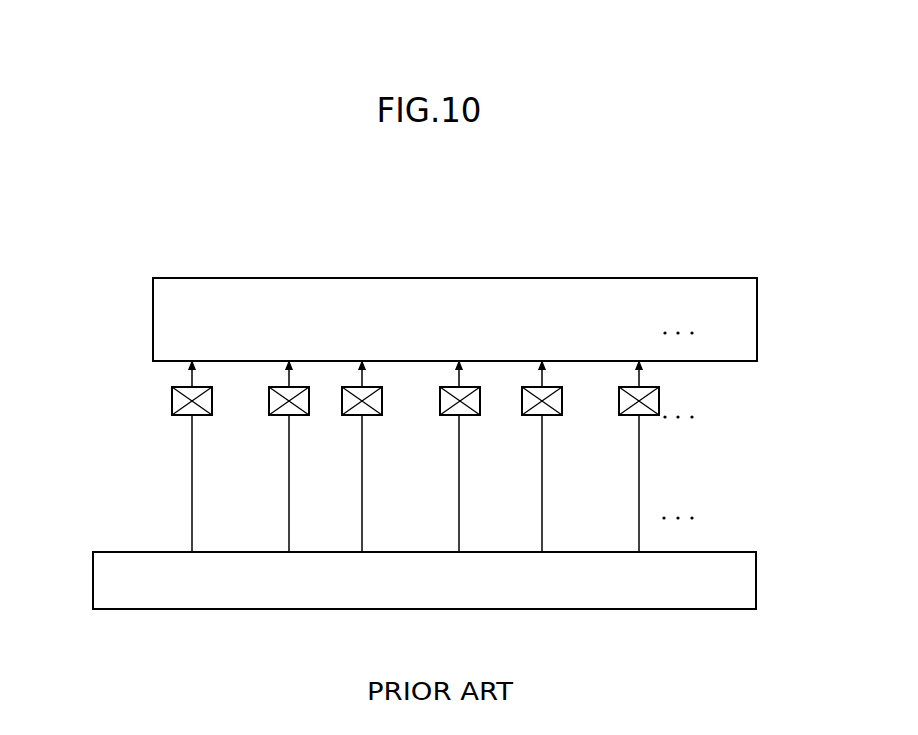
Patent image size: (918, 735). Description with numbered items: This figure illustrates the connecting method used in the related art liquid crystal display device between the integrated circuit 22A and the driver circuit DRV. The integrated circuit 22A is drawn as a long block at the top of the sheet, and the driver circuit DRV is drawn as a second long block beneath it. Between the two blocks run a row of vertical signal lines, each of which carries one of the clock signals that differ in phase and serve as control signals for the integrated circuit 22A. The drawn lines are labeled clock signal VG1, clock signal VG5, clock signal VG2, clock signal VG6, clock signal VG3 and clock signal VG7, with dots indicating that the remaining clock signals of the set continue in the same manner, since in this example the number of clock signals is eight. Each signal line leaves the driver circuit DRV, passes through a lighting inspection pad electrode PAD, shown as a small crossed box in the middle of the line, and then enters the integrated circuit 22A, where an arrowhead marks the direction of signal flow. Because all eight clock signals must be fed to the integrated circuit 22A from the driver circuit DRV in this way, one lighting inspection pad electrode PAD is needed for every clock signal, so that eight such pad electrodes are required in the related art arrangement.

The integrated circuit 22A is at (735, 277).
The lighting inspection pad electrode PAD is at (168, 403).
The driver circuit DRV is at (744, 552).
The clock signal VG1 is at (190, 434).
The clock signal VG2 is at (360, 434).
The clock signal VG3 is at (540, 434).
The clock signal VG5 is at (287, 434).
The clock signal VG6 is at (457, 434).
The clock signal VG7 is at (637, 434).